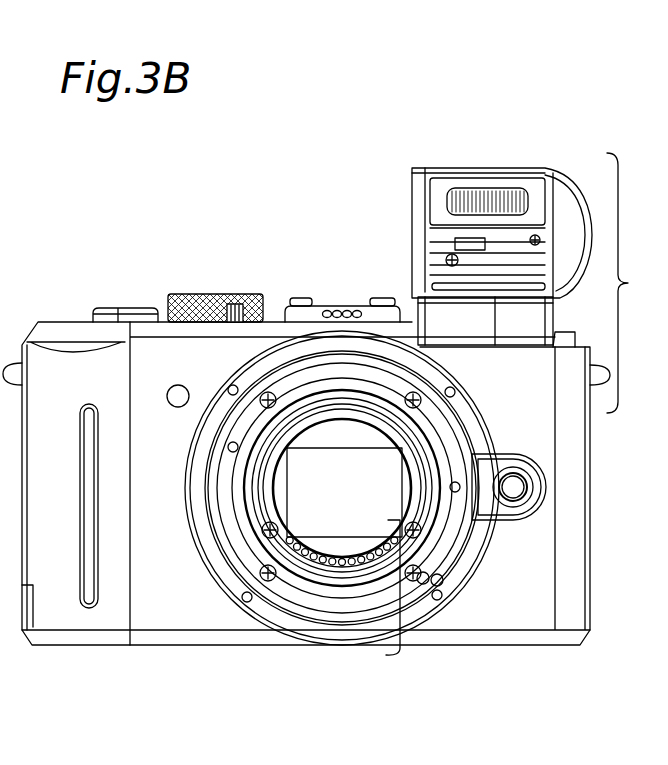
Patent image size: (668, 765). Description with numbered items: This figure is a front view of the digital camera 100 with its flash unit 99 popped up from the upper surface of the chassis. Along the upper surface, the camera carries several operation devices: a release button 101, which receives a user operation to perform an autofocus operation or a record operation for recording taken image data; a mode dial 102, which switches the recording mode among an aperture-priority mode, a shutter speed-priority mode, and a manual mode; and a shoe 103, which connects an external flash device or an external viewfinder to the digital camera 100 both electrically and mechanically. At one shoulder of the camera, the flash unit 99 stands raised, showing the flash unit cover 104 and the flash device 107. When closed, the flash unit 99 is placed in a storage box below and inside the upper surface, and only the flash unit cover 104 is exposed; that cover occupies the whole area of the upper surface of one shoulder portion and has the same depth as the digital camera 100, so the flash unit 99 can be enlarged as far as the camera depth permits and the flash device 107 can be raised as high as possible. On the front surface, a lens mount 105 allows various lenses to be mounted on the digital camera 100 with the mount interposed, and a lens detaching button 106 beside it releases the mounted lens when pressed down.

The flash unit 99 is at (635, 283).
The digital camera 100 is at (307, 158).
The release button 101 is at (132, 308).
The mode dial 102 is at (222, 293).
The shoe 103 is at (366, 307).
The flash unit cover 104 is at (535, 168).
The lens mount 105 is at (338, 590).
The lens detaching button 106 is at (513, 490).
The flash device 107 is at (473, 192).